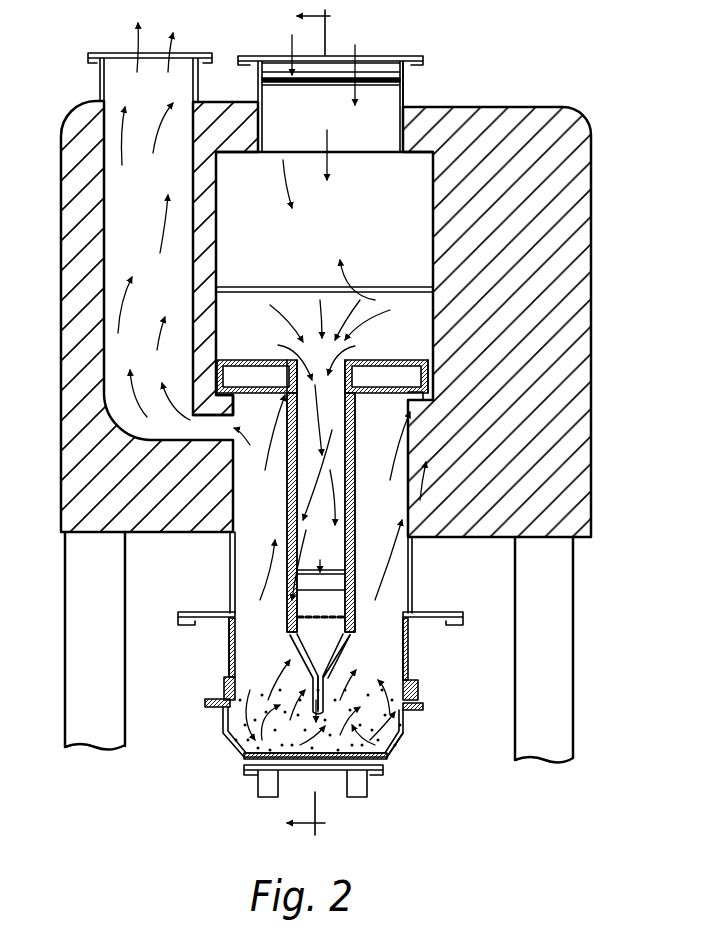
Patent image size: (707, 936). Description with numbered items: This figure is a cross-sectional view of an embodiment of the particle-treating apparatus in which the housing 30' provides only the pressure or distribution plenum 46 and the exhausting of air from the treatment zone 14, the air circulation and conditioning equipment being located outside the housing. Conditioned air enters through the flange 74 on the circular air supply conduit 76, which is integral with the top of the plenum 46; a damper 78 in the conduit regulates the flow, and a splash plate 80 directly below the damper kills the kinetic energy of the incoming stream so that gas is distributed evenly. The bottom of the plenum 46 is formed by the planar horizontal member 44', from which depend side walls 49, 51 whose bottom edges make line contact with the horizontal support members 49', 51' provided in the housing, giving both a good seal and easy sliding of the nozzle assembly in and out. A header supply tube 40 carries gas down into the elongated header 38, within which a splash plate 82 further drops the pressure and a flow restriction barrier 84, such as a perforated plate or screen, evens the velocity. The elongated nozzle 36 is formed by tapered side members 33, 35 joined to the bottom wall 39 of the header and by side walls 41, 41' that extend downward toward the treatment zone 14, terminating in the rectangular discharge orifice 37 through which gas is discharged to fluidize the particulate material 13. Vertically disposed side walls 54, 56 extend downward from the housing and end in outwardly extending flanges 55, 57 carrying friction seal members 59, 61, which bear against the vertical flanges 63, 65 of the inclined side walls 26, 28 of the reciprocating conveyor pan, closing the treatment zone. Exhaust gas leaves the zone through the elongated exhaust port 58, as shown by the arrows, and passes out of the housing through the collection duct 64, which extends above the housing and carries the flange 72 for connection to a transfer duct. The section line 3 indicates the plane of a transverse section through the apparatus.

The section line 3- 3 is at (318, 420).
The particulate material 13 is at (210, 709).
The treatment zone 14 is at (413, 568).
The inclined side wall 26 is at (237, 738).
The inclined side wall 28 is at (399, 749).
The housing 30' is at (303, 432).
The side member 33 is at (306, 665).
The side member 35 is at (331, 654).
The elongated nozzle 36 is at (288, 646).
The discharge orifice 37 is at (323, 695).
The header 38 is at (297, 616).
The bottom wall 39 is at (347, 632).
The header supply tube 40 is at (348, 539).
The side wall 41 is at (294, 694).
The side wall 41' is at (363, 672).
The planar horizontal member 44' is at (386, 358).
The pressure plenum 46 is at (340, 230).
The side wall 49 is at (257, 362).
The horizontal support member 49' is at (200, 383).
The side wall 51 is at (413, 357).
The horizontal support member 51' is at (396, 405).
The side wall 54 is at (228, 545).
The flange 55 is at (205, 611).
The side wall 56 is at (413, 547).
The flange 57 is at (448, 613).
The exhaust port 58 is at (226, 438).
The friction seal member 59 is at (230, 645).
The friction seal member 61 is at (407, 645).
The flange 63 is at (224, 688).
The collection duct 64 is at (168, 296).
The flange 65 is at (412, 689).
The flange 72 is at (90, 55).
The flange 74 is at (256, 58).
The air supply conduit 76 is at (403, 86).
The damper 78 is at (300, 81).
The splash plate 80 is at (372, 290).
The splash plate 82 is at (296, 576).
The flow restriction barrier 84 is at (338, 598).